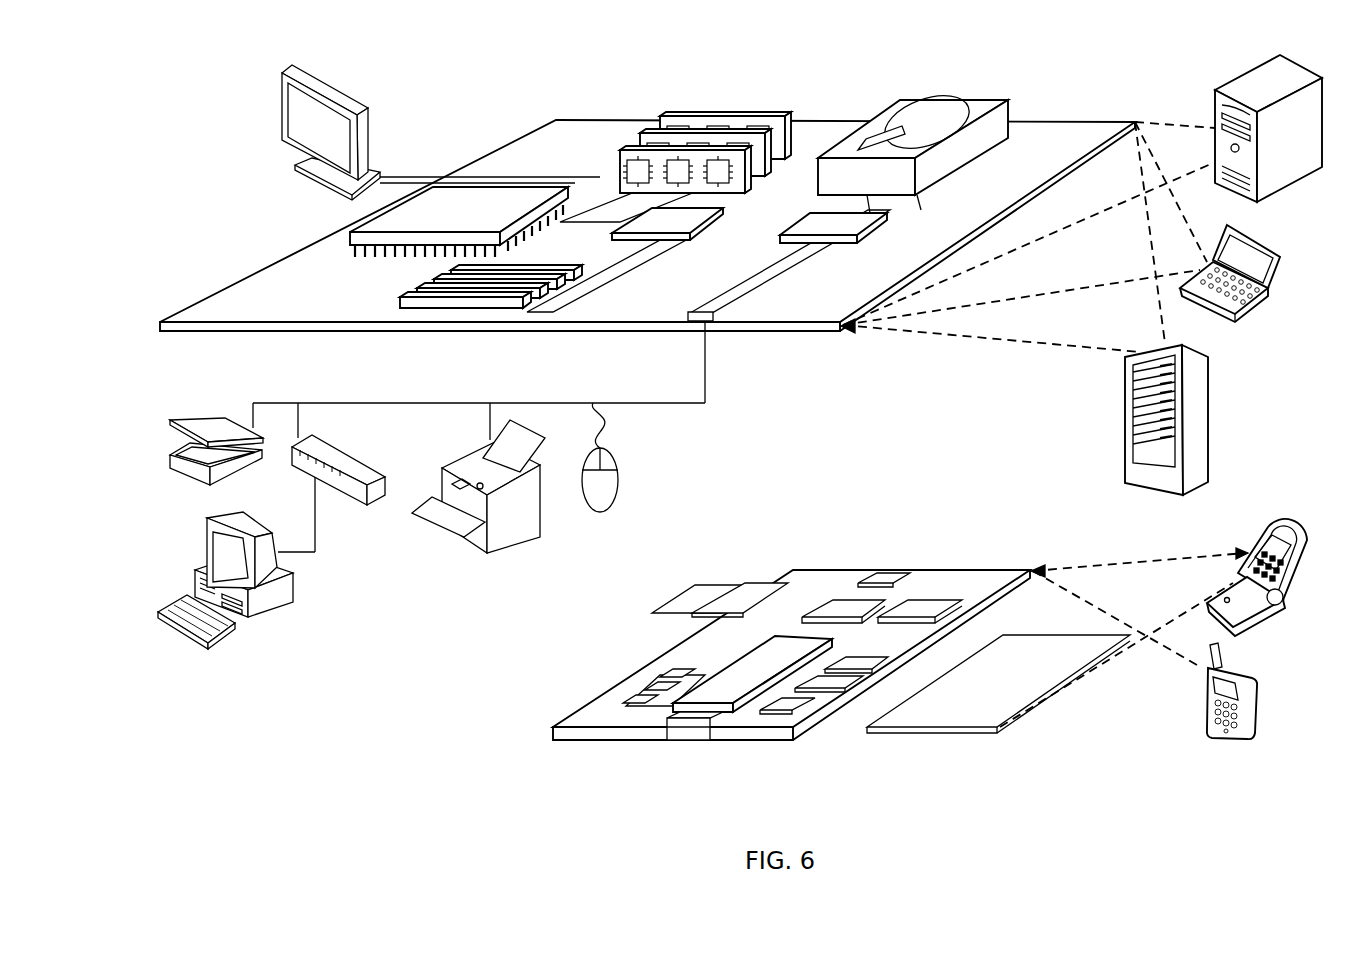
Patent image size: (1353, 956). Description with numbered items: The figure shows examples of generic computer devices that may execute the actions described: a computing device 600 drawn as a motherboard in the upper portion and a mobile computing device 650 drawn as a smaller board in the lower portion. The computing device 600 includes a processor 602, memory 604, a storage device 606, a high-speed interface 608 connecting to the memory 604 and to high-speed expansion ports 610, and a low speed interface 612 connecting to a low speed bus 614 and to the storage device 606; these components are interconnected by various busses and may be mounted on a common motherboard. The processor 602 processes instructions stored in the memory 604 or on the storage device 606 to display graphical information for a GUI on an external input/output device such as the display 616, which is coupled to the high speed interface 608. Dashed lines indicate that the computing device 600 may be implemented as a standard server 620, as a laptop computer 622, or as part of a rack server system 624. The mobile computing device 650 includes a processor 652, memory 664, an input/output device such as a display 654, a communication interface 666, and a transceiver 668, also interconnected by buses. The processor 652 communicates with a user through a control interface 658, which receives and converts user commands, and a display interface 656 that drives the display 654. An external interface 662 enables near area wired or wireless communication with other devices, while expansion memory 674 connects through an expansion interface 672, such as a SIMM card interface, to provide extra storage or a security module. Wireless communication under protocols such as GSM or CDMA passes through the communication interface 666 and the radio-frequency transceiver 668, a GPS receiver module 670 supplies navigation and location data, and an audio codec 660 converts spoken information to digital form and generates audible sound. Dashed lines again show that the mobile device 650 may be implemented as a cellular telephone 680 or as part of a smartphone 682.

The computing device 600 is at (478, 92).
The processor 602 is at (357, 237).
The memory 604 is at (670, 112).
The storage device 606 is at (908, 100).
The high-speed interface 608 is at (637, 218).
The high-speed expansion ports 610 is at (425, 292).
The low speed interface 612 is at (810, 217).
The low speed bus 614 is at (715, 322).
The display 616 is at (287, 70).
The standard server 620 is at (1215, 107).
The laptop computer 622 is at (1288, 250).
The rack server system 624 is at (1125, 443).
The mobile computing device 650 is at (524, 746).
The processor 652 is at (727, 697).
The display 654 is at (963, 713).
The display interface 656 is at (793, 712).
The control interface 658 is at (830, 688).
The audio codec 660 is at (853, 664).
The external interface 662 is at (690, 720).
The memory 664 is at (640, 688).
The communication interface 666 is at (843, 607).
The transceiver 668 is at (918, 608).
The GPS receiver module 670 is at (893, 570).
The expansion interface 672 is at (773, 582).
The expansion memory 674 is at (703, 582).
The cellular telephone 680 is at (1262, 523).
The smartphone 682 is at (1207, 713).